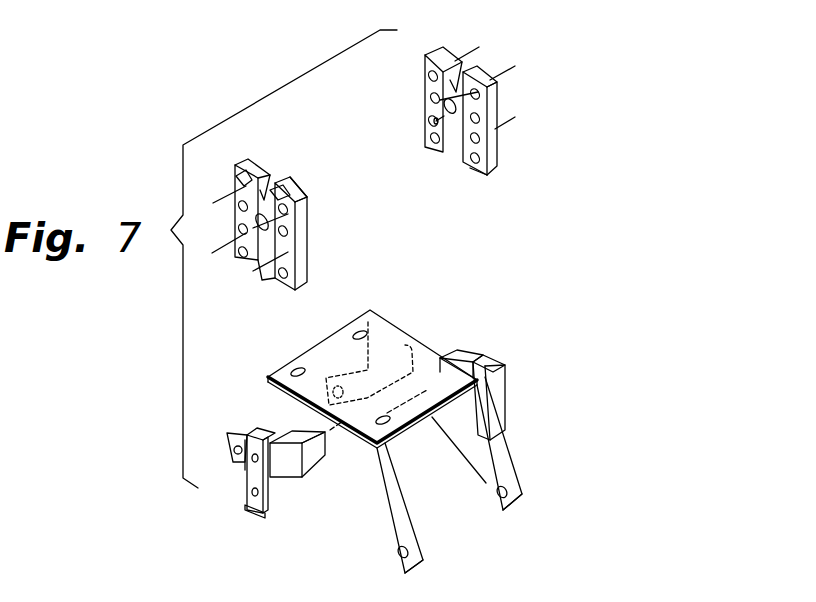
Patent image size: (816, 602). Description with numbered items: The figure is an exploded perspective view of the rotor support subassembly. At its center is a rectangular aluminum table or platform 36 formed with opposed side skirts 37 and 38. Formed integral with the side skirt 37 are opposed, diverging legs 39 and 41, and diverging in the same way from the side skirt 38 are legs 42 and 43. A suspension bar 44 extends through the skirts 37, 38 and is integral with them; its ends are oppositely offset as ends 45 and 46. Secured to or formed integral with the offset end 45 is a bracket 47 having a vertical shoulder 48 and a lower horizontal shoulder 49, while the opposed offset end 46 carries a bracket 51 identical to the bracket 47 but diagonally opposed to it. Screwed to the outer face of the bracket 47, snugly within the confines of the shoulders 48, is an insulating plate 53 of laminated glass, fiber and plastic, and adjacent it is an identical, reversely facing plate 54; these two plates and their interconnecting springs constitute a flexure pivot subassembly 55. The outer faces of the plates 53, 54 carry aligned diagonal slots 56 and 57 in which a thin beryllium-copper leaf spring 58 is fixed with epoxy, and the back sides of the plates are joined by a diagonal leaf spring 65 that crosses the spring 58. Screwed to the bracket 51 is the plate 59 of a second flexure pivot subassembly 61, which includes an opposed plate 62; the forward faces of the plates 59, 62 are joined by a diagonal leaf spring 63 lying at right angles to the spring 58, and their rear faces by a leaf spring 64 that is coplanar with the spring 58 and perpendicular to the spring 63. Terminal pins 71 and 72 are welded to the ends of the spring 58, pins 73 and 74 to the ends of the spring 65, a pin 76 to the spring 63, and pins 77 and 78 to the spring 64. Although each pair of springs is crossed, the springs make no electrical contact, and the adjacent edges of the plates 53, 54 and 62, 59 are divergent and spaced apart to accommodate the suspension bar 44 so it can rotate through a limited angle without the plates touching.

The rectangular table or platform 36 is at (370, 312).
The side skirt 37 is at (367, 465).
The side skirt 38 is at (467, 423).
The leg 39 is at (240, 432).
The leg 41 is at (408, 522).
The leg 42 is at (345, 366).
The leg 43 is at (483, 478).
The suspension bar 44 is at (418, 348).
The offset end 45 is at (287, 441).
The offset end 46 is at (460, 357).
The bracket 47 is at (270, 505).
The vertical shoulder 48 is at (245, 475).
The lower horizontal shoulder 49 is at (255, 512).
The bracket 51 is at (495, 360).
The insulating plate 53 is at (258, 160).
The plate 54 is at (305, 278).
The flexure pivot subassembly 55 is at (274, 155).
The diagonal slot 56 is at (236, 176).
The diagonal slot 57 is at (298, 256).
The leaf spring 58 is at (283, 192).
The plate 59 is at (480, 171).
The flexure pivot subassembly 61 is at (414, 80).
The plate 62 is at (437, 52).
The leaf spring 63 is at (428, 122).
The leaf spring 64 is at (440, 99).
The leaf spring 65 is at (308, 200).
The terminal pin 71 is at (222, 203).
The terminal pin 72 is at (262, 280).
The terminal pin 73 is at (222, 250).
The terminal pin 74 is at (290, 218).
The terminal pin 76 is at (500, 70).
The terminal pin 77 is at (460, 54).
The terminal pin 78 is at (509, 122).